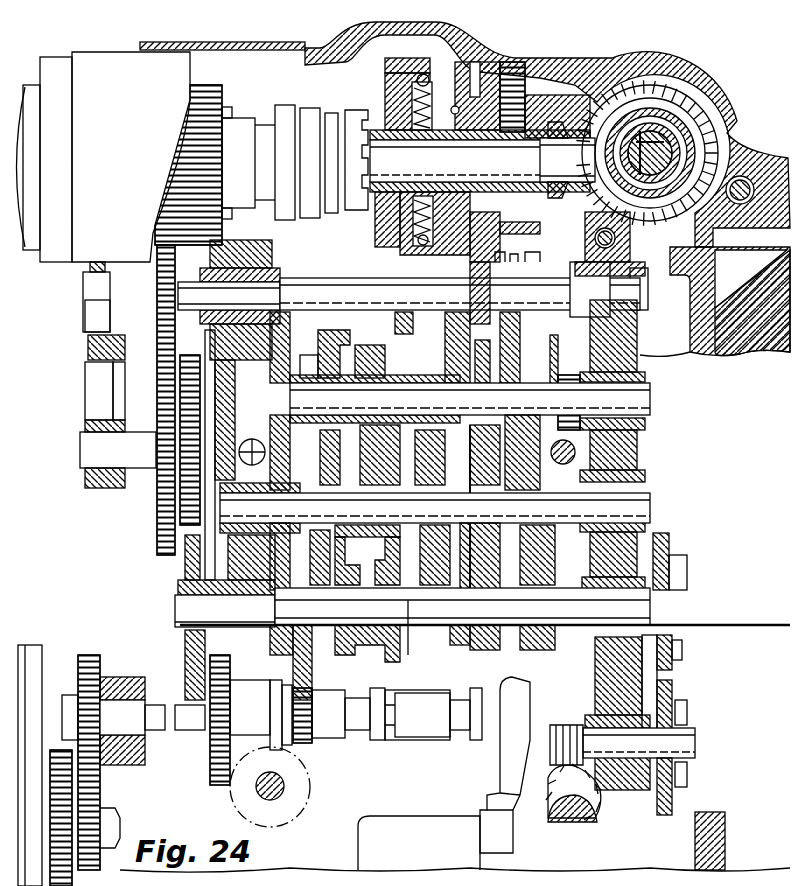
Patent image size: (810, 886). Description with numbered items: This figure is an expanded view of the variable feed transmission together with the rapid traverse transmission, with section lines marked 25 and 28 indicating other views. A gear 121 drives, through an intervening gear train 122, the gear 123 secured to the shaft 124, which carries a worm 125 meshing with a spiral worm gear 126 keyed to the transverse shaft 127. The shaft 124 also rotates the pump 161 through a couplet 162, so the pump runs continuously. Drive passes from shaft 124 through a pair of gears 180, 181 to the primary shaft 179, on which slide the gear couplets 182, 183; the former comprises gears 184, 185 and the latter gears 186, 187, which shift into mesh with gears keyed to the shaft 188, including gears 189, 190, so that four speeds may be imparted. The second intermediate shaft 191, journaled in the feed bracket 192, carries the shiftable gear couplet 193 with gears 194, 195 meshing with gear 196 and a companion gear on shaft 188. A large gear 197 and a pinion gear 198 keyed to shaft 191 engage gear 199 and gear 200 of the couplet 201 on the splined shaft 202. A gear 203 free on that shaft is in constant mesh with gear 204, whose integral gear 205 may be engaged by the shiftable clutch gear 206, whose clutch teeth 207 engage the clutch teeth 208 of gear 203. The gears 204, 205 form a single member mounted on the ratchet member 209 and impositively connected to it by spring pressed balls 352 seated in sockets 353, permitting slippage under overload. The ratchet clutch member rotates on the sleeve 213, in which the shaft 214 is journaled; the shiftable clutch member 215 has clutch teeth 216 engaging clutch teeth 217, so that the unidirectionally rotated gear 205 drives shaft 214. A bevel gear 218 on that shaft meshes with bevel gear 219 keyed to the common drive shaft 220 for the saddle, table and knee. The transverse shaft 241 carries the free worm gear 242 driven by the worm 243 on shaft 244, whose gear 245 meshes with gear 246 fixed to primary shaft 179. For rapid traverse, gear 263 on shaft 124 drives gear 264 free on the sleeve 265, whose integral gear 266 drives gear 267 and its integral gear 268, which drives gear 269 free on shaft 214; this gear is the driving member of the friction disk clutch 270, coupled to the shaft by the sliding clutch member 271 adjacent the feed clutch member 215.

The section line 25 is at (27, 167).
The section line 28 is at (385, 75).
The gear 121 is at (85, 885).
The gear train 122 is at (100, 797).
The gear 123 is at (92, 655).
The shaft 124 is at (135, 765).
The worm 125 is at (290, 755).
The spiral worm gear 126 is at (280, 826).
The shaft 127 is at (256, 790).
The pump 161 is at (497, 688).
The couplet 162 is at (432, 728).
The primary shaft 179 is at (410, 655).
The gear 180 is at (325, 703).
The gear 181 is at (312, 665).
The gear couplet 182 is at (358, 648).
The gear couplet 183 is at (540, 655).
The gear 184 is at (364, 570).
The gear 185 is at (394, 562).
The gear 186 is at (310, 462).
The gear 187 is at (410, 452).
The shaft 188 is at (542, 524).
The gear 189 is at (440, 554).
The gear 190 is at (498, 558).
The second intermediate shaft 191 is at (520, 395).
The feed bracket 192 is at (632, 452).
The shiftable gear couplet 193 is at (356, 345).
The gear 194 is at (352, 340).
The gear 195 is at (396, 370).
The gear 196 is at (352, 536).
The large gear 197 is at (478, 350).
The pinion gear 198 is at (570, 375).
The gear 199 is at (490, 262).
The gear 200 is at (545, 222).
The couplet 201 is at (548, 340).
The splined shaft 202 is at (560, 272).
The gear 203 is at (468, 250).
The gear 204 is at (462, 90).
The gear 205 is at (400, 70).
The shiftable clutch gear 206 is at (392, 338).
The clutch teeth 207 is at (396, 330).
The clutch teeth 208 is at (433, 304).
The ratchet member 209 is at (385, 238).
The sleeve 213 is at (490, 183).
The shaft 214 is at (552, 138).
The shiftable clutch member 215 is at (330, 112).
The clutch teeth 216 is at (362, 110).
The clutch teeth 217 is at (378, 222).
The bevel gear 218 is at (580, 120).
The bevel gear 219 is at (665, 105).
The common drive shaft 220 is at (665, 130).
The shaft 241 is at (565, 822).
The worm gear 242 is at (606, 815).
The worm 243 is at (572, 724).
The shaft 244 is at (690, 733).
The gear 245 is at (672, 690).
The gear 246 is at (668, 552).
The gear 263 is at (210, 775).
The gear 264 is at (185, 572).
The sleeve 265 is at (178, 597).
The gear 266 is at (185, 670).
The gear 267 is at (186, 352).
The gear 268 is at (162, 345).
The gear 269 is at (200, 80).
The friction disk clutch 270 is at (245, 107).
The sliding clutch member 271 is at (277, 104).
The spring pressed balls 352 is at (440, 284).
The sockets 353 is at (428, 76).